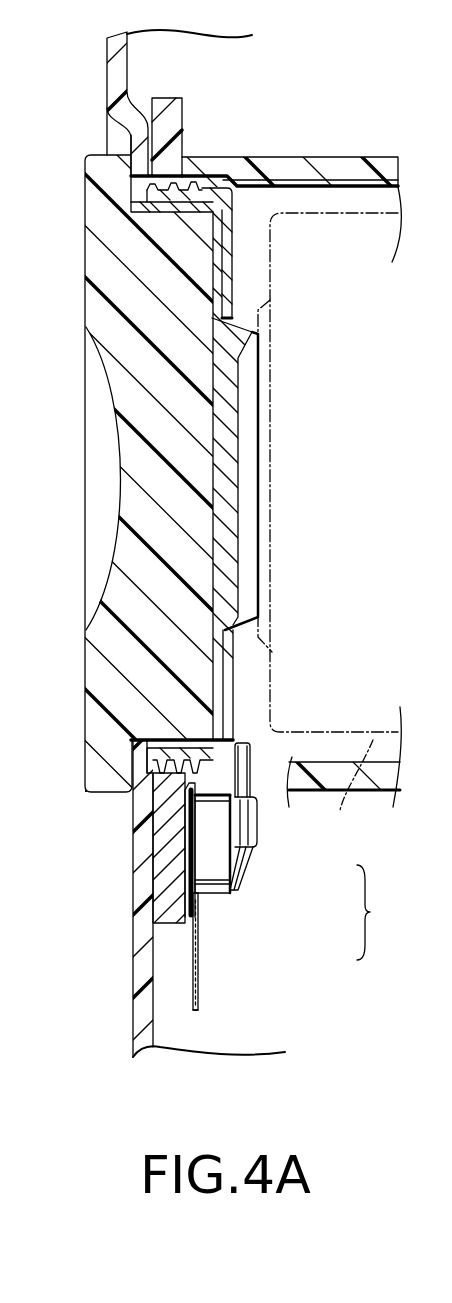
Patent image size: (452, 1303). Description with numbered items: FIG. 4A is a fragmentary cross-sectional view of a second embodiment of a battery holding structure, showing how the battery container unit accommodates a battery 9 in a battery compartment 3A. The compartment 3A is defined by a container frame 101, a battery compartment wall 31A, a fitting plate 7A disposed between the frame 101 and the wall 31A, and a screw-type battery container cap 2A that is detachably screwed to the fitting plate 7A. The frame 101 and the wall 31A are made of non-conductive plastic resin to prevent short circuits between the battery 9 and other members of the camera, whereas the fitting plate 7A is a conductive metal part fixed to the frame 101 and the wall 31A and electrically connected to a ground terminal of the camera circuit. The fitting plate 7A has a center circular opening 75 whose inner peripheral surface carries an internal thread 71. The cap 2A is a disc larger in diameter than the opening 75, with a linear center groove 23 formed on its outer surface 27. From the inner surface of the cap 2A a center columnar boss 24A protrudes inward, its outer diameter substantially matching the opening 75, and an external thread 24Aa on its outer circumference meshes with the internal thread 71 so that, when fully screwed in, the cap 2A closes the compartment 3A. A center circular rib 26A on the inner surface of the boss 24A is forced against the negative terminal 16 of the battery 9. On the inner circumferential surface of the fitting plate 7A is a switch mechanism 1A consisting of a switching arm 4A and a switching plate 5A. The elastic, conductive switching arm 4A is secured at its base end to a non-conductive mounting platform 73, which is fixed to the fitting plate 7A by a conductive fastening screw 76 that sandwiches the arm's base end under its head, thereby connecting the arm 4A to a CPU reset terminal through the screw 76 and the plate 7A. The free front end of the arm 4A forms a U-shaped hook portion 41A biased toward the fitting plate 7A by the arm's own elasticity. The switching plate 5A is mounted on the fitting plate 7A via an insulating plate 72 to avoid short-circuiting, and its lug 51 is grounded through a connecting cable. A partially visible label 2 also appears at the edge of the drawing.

The container frame 101 is at (110, 80).
The outer surface 27 is at (82, 258).
The linear center groove 23 is at (98, 400).
The center columnar boss 24A is at (180, 497).
The external thread 24Aa is at (190, 212).
The center circular rib 26A is at (247, 340).
The battery compartment wall 31A is at (270, 167).
The battery compartment 3A is at (337, 197).
The negative terminal 16 is at (270, 483).
The center circular opening 75 is at (177, 767).
The internal thread 71 is at (158, 778).
The fitting plate 7A is at (165, 870).
The insulating plate 72 is at (183, 918).
The mounting platform 73 is at (218, 882).
The switching arm 4A is at (258, 822).
The hook portion 41A is at (243, 767).
The fastening screw 76 is at (250, 867).
The switching plate 5A is at (198, 968).
The lug 51 is at (200, 1000).
The switch mechanism 1A is at (385, 912).
The battery 9 is at (344, 773).
The screw-type battery container cap 2A is at (70, 703).
The unit 2 is at (447, 606).